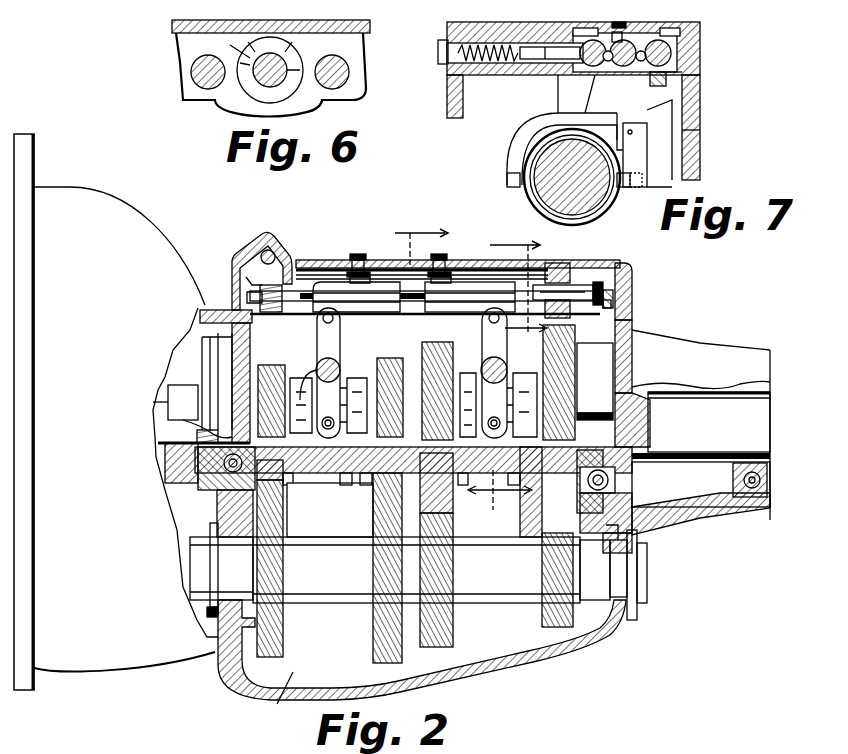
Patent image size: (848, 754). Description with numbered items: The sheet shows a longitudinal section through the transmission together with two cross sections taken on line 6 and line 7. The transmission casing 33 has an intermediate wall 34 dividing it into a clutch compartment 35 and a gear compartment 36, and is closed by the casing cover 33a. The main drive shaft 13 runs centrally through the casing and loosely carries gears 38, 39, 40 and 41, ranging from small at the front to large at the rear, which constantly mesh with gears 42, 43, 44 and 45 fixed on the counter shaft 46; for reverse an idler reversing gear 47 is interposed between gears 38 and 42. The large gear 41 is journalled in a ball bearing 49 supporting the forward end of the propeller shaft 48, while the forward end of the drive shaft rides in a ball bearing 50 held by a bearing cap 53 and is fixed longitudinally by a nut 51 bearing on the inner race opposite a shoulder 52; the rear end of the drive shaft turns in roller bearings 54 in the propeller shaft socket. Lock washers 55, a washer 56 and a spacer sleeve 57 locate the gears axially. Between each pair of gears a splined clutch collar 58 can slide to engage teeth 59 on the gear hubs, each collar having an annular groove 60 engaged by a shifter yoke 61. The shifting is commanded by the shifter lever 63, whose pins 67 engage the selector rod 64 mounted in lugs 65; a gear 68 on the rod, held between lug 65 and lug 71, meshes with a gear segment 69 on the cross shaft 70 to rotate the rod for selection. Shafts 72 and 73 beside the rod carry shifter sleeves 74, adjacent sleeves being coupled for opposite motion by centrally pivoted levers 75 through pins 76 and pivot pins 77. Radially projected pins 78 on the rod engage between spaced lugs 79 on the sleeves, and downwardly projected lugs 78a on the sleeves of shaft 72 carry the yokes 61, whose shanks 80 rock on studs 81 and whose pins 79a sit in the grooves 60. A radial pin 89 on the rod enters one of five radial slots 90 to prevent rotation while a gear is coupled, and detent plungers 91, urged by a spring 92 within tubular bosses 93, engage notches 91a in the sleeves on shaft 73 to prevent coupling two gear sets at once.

In FIG. 7, the main transmission shaft 13 is at (555, 142).
In FIG. 2, the main transmission shaft 13 is at (160, 430).
In FIG. 2, the transmission casing 33 is at (530, 662).
In FIG. 6, the transmission casing cover 33a is at (370, 33).
In FIG. 7, the transmission casing cover 33a is at (700, 50).
In FIG. 2, the transmission casing cover 33a is at (350, 260).
In FIG. 2, the intermediate wall 34 is at (225, 640).
In FIG. 2, the clutch compartment 35 is at (178, 582).
In FIG. 2, the gear compartment 36 is at (275, 699).
In FIG. 2, the gear 38 is at (272, 365).
In FIG. 2, the gear 39 is at (390, 358).
In FIG. 2, the gear 40 is at (438, 342).
In FIG. 2, the gear 41 is at (577, 365).
In FIG. 2, the gear 42 is at (283, 628).
In FIG. 2, the gear 43 is at (373, 652).
In FIG. 2, the gear 44 is at (453, 628).
In FIG. 2, the gear 45 is at (542, 615).
In FIG. 2, the counter shaft 46 is at (450, 572).
In FIG. 2, the idler reversing gear 47 is at (297, 483).
In FIG. 2, the propeller shaft 48 is at (701, 432).
In FIG. 2, the ball bearing 49 is at (610, 483).
In FIG. 2, the ball bearing 50 is at (205, 490).
In FIG. 2, the nut 51 is at (188, 425).
In FIG. 2, the shoulder 52 is at (190, 400).
In FIG. 2, the bearing cap 53 is at (224, 466).
In FIG. 2, the roller bearings 54 is at (650, 440).
In FIG. 2, the lock washers 55 is at (328, 417).
In FIG. 2, the washer 56 is at (613, 298).
In FIG. 2, the spacer sleeve 57 is at (366, 485).
In FIG. 7, the clutch block or collar 58 is at (507, 160).
In FIG. 2, the clutch block or collar 58 is at (350, 395).
In FIG. 2, the teeth 59 is at (300, 378).
In FIG. 7, the annular groove 60 is at (600, 218).
In FIG. 2, the annular groove 60 is at (434, 480).
In FIG. 2, the shifter yoke 61 is at (335, 340).
In FIG. 2, the shifter lever 63 is at (627, 268).
In FIG. 6, the selector rod 64 is at (278, 86).
In FIG. 7, the selector rod 64 is at (620, 66).
In FIG. 2, the selector rod 64 is at (575, 285).
In FIG. 6, the lugs 65 is at (326, 110).
In FIG. 2, the lugs 65 is at (312, 262).
In FIG. 2, the pins 67 is at (611, 306).
In FIG. 2, the gear 68 is at (240, 292).
In FIG. 2, the gear segment 69 is at (255, 280).
In FIG. 2, the cross shaft 70 is at (270, 234).
In FIG. 2, the lug 71 is at (223, 268).
In FIG. 6, the shaft 72 is at (356, 90).
In FIG. 7, the shaft 72 is at (690, 38).
In FIG. 2, the shaft 72 is at (412, 262).
In FIG. 6, the shaft 73 is at (193, 72).
In FIG. 7, the shaft 73 is at (588, 65).
In FIG. 7, the shifter sleeves 74 is at (570, 22).
In FIG. 2, the shifter sleeves 74 is at (415, 310).
In FIG. 7, the centrally pivoted levers 75 is at (617, 32).
In FIG. 2, the centrally pivoted levers 75 is at (360, 254).
In FIG. 7, the pins 76 is at (658, 74).
In FIG. 2, the pins 76 is at (435, 297).
In FIG. 7, the pins 77 is at (612, 15).
In FIG. 2, the pins 77 is at (360, 254).
In FIG. 7, the radially projected pins or lugs 78 is at (590, 100).
In FIG. 7, the downwardly projected lugs 78a is at (700, 72).
In FIG. 2, the downwardly projected lugs 78a is at (408, 308).
In FIG. 7, the spaced lugs 79 is at (608, 61).
In FIG. 7, the pins 79a is at (512, 187).
In FIG. 2, the pins 79a is at (500, 411).
In FIG. 7, the shank 80 is at (700, 95).
In FIG. 2, the shank 80 is at (308, 338).
In FIG. 7, the stud 81 is at (660, 128).
In FIG. 2, the stud 81 is at (328, 382).
In FIG. 6, the radial pin 89 is at (300, 60).
In FIG. 2, the radial pin 89 is at (565, 318).
In FIG. 6, the radial slots 90 is at (240, 48).
In FIG. 2, the radial slots 90 is at (560, 262).
In FIG. 7, the detent plungers 91 is at (515, 62).
In FIG. 7, the notches 91a is at (531, 76).
In FIG. 7, the spring 92 is at (480, 63).
In FIG. 7, the tubular bosses 93 is at (435, 70).
In FIG. 2, the section line 6— 6 is at (518, 293).
In FIG. 2, the section line 7— 7 is at (463, 371).